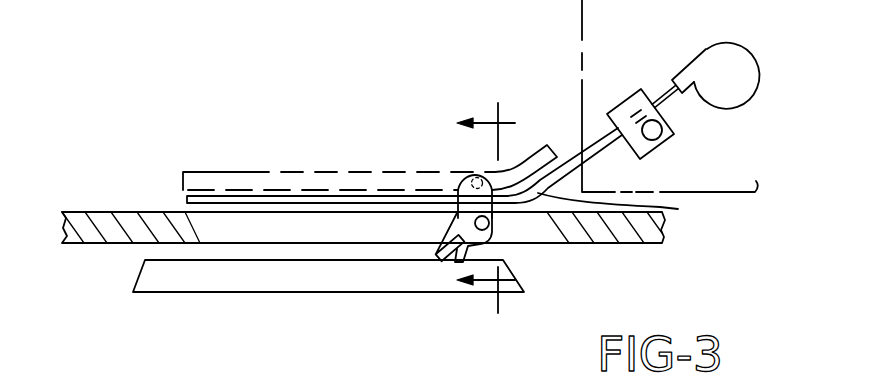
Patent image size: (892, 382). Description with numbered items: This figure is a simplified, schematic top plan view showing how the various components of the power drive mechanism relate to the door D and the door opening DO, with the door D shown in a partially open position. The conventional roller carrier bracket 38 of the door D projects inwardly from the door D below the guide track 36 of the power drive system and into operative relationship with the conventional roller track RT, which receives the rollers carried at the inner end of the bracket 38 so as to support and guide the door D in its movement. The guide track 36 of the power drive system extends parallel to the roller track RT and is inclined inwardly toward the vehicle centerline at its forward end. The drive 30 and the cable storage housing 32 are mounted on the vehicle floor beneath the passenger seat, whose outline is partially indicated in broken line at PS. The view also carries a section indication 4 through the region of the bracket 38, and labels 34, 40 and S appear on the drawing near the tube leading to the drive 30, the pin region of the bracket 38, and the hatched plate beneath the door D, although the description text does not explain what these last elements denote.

The drive 30 is at (631, 93).
The cable storage housing 32 is at (712, 60).
The conduit tube 34 is at (583, 157).
The guide track 36 is at (629, 215).
The roller carrier bracket 38 is at (488, 243).
The pin 40 is at (440, 237).
The section line 4- 4 is at (476, 208).
The roller track RT is at (242, 172).
The passenger seat PS is at (581, 32).
The door opening DO is at (188, 225).
The door D is at (178, 293).
The sill S is at (613, 243).